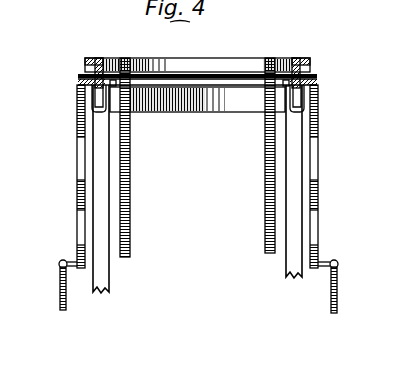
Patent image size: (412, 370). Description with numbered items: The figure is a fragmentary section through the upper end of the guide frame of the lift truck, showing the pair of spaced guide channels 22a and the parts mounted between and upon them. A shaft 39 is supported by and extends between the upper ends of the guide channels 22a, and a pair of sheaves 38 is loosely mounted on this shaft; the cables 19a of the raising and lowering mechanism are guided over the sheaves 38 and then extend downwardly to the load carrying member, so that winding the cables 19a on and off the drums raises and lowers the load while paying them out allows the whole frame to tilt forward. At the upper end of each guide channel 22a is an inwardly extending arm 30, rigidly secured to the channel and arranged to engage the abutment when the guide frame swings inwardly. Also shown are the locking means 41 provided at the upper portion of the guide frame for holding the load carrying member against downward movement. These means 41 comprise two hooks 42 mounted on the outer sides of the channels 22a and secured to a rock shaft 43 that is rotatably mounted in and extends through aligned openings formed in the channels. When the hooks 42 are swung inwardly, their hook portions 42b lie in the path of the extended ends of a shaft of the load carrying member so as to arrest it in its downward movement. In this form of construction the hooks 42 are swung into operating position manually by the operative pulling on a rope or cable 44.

The inwardly extending arm 30 is at (105, 58).
The sheaves 38 is at (142, 62).
The rock shaft 43 is at (192, 69).
The means for locking or holding the load carrying member 41 is at (78, 78).
The hook 42 is at (77, 98).
The hook portion 42b is at (81, 131).
The shaft 39 is at (215, 88).
The cables 19a is at (126, 219).
The guide channels 22a is at (110, 281).
The rope or cable 44 is at (60, 292).